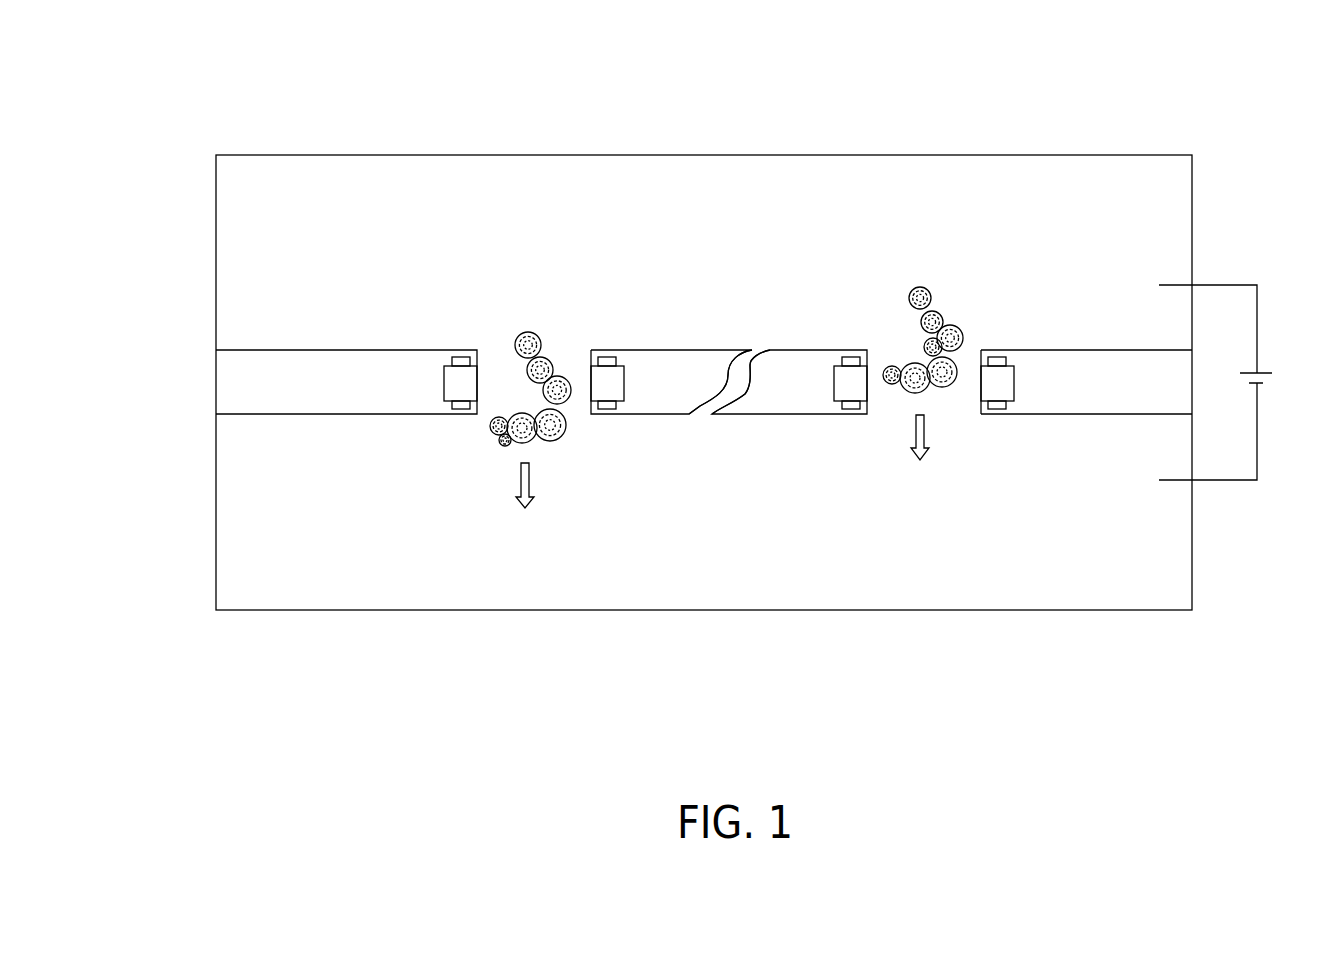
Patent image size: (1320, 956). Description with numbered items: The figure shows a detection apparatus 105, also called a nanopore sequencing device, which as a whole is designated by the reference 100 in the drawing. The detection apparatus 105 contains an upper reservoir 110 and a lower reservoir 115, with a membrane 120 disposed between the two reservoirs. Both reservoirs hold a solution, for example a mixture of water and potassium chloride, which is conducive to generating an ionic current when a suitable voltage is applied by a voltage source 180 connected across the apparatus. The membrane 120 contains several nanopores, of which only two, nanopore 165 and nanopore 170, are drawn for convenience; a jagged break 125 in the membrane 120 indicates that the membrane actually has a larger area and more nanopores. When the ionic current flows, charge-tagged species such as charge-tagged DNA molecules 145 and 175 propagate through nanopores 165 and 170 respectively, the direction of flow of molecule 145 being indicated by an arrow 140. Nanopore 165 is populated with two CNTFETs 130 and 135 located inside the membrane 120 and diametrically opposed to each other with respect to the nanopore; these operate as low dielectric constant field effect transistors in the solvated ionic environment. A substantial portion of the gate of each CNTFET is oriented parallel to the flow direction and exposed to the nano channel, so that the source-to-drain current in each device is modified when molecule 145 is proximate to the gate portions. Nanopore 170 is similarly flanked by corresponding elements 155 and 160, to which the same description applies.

The system 100 is at (190, 88).
The detection apparatus 105 is at (1192, 220).
The upper reservoir 110 is at (322, 241).
The lower reservoir 115 is at (321, 537).
The membrane 120 is at (280, 391).
The jagged break 125 is at (764, 338).
The CNTFET 130 is at (444, 390).
The CNTFET 135 is at (624, 389).
The arrow 140 is at (533, 488).
The charge-tagged DNA molecule 145 is at (557, 355).
The third electrode 155 is at (834, 386).
The fourth electrode 160 is at (1014, 386).
The nanopore 165 is at (530, 359).
The nanopore 170 is at (924, 330).
The charge-tagged DNA molecule 175 is at (968, 336).
The voltage source 180 is at (1232, 368).